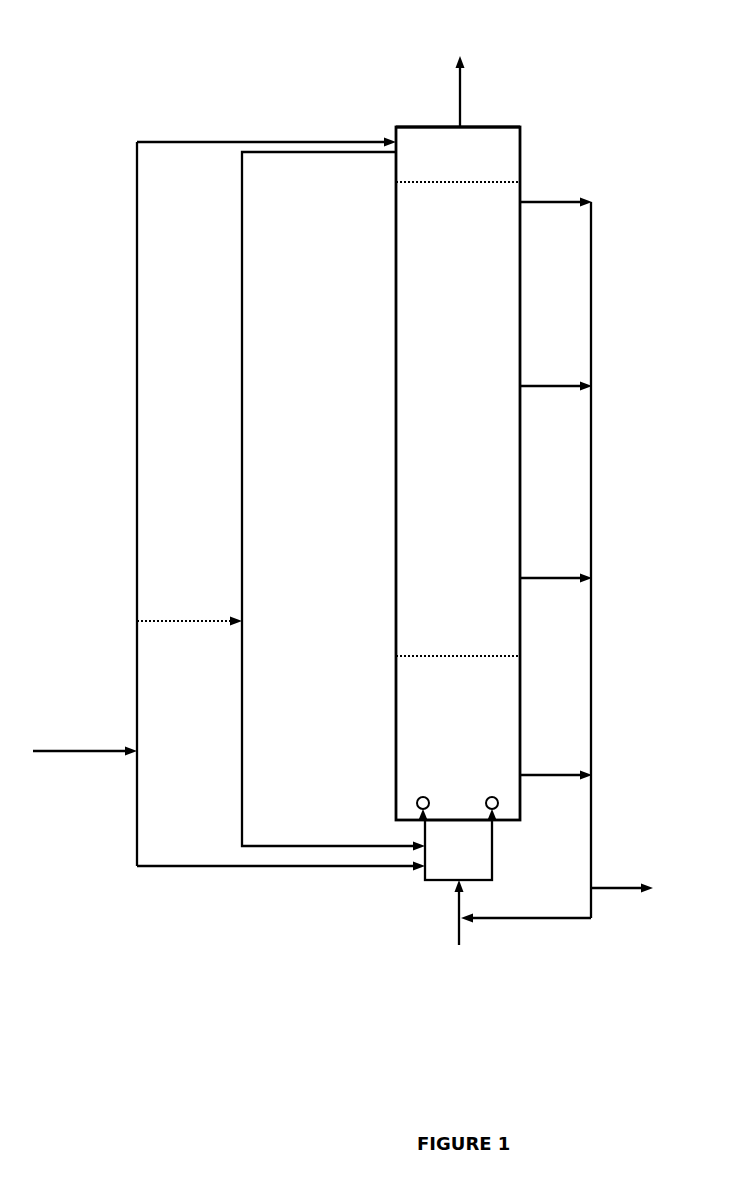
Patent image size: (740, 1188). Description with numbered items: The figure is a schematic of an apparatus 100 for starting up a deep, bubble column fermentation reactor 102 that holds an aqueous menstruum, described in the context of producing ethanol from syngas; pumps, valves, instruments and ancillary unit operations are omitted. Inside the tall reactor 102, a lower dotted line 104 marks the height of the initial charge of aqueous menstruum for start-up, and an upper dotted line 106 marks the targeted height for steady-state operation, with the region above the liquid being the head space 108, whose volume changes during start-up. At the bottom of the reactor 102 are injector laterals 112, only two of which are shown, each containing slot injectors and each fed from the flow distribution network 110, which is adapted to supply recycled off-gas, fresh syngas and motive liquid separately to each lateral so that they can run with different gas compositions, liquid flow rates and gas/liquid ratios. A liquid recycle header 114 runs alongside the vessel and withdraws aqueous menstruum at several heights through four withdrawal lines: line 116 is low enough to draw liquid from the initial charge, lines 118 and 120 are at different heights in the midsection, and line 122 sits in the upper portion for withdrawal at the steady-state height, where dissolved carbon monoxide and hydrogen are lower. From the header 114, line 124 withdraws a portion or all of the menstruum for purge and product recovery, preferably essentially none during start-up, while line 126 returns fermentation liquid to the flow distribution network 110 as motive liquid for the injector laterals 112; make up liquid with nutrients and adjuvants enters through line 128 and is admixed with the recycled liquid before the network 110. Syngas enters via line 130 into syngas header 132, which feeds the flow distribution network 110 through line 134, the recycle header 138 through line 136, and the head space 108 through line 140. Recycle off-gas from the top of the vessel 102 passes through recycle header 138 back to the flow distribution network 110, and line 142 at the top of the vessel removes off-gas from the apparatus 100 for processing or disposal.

The apparatus 100 is at (622, 1013).
The bubble column fermentation reactor 102 is at (388, 541).
The initial charge height line 104 is at (435, 628).
The steady-state height line 106 is at (433, 185).
The head space 108 is at (487, 150).
The flow distribution network 110 is at (425, 892).
The injector laterals 112 is at (414, 800).
The liquid recycle header 114 is at (602, 607).
The withdrawal line 116 is at (545, 765).
The withdrawal line 118 is at (547, 567).
The withdrawal line 120 is at (547, 378).
The withdrawal line 122 is at (553, 192).
The purge and product recovery line 124 is at (627, 872).
The fermentation liquid recycle line 126 is at (513, 925).
The make up liquid line 128 is at (440, 950).
The syngas supply line 130 is at (87, 762).
The syngas header 132 is at (128, 579).
The syngas line to flow distribution network 134 is at (263, 876).
The syngas line to recycle header 136 is at (208, 628).
The recycle header 138 is at (232, 416).
The syngas line to head space 140 is at (255, 133).
The off-gas removal line 142 is at (480, 65).